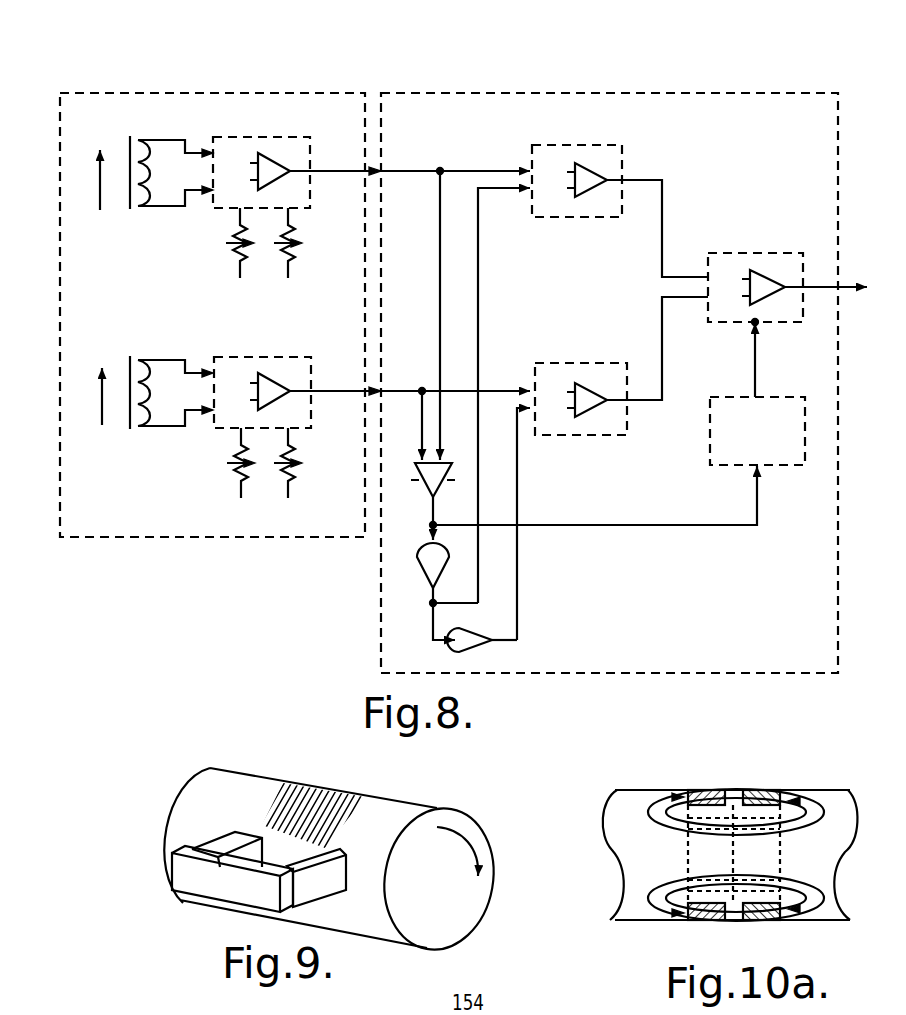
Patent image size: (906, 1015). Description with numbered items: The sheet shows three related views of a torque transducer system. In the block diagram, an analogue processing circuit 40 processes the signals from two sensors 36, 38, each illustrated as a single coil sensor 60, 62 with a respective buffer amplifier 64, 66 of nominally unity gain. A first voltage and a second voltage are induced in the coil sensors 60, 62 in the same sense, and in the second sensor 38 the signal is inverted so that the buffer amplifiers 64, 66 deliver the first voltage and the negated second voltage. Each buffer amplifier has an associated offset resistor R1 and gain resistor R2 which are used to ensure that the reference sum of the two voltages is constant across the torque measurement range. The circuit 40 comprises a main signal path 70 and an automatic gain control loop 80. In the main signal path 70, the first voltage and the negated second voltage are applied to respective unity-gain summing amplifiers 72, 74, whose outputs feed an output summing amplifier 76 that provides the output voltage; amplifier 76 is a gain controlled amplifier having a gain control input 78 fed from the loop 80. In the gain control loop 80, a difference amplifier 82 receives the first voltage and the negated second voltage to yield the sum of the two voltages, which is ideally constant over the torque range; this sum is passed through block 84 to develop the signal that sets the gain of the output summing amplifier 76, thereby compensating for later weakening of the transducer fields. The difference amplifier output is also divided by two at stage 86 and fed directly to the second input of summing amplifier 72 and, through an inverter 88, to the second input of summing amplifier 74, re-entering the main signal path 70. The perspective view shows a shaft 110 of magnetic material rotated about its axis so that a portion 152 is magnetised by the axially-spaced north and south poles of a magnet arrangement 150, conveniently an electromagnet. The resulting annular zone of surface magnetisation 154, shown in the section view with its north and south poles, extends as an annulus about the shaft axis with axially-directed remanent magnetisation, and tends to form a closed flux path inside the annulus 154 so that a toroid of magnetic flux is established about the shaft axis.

In FIG. 8, the sensor 36 is at (231, 127).
In FIG. 8, the sensor 38 is at (230, 347).
In FIG. 8, the analogue processing circuit 40 is at (838, 157).
In FIG. 8, the single coil sensor 60 is at (171, 172).
In FIG. 8, the single coil sensor 62 is at (171, 392).
In FIG. 8, the buffer amplifier 64 is at (261, 172).
In FIG. 8, the buffer amplifier 66 is at (262, 392).
In FIG. 8, the main signal path 70 is at (519, 299).
In FIG. 8, the summing amplifier 72 is at (620, 211).
In FIG. 8, the summing amplifier 74 is at (621, 366).
In FIG. 8, the output summing amplifier 76 is at (788, 287).
In FIG. 8, the gain control input 78 is at (752, 328).
In FIG. 8, the automatic gain control loop 80 is at (704, 557).
In FIG. 8, the difference amplifier 82 is at (579, 501).
In FIG. 8, the block 84 is at (757, 430).
In FIG. 8, the divide-by-2 stage 86 is at (440, 591).
In FIG. 8, the inverter 88 is at (482, 632).
In FIG. 8, the offset resistor R1 is at (315, 353).
In FIG. 8, the gain resistor R2 is at (215, 353).
In FIG. 9, the shaft 110 is at (176, 793).
In FIG. 9, the magnet arrangement 150 is at (176, 881).
In FIG. 9, the magnetised portion 152 is at (322, 812).
In FIG. 10A, the annular zone of surface magnetisation 154 is at (733, 790).